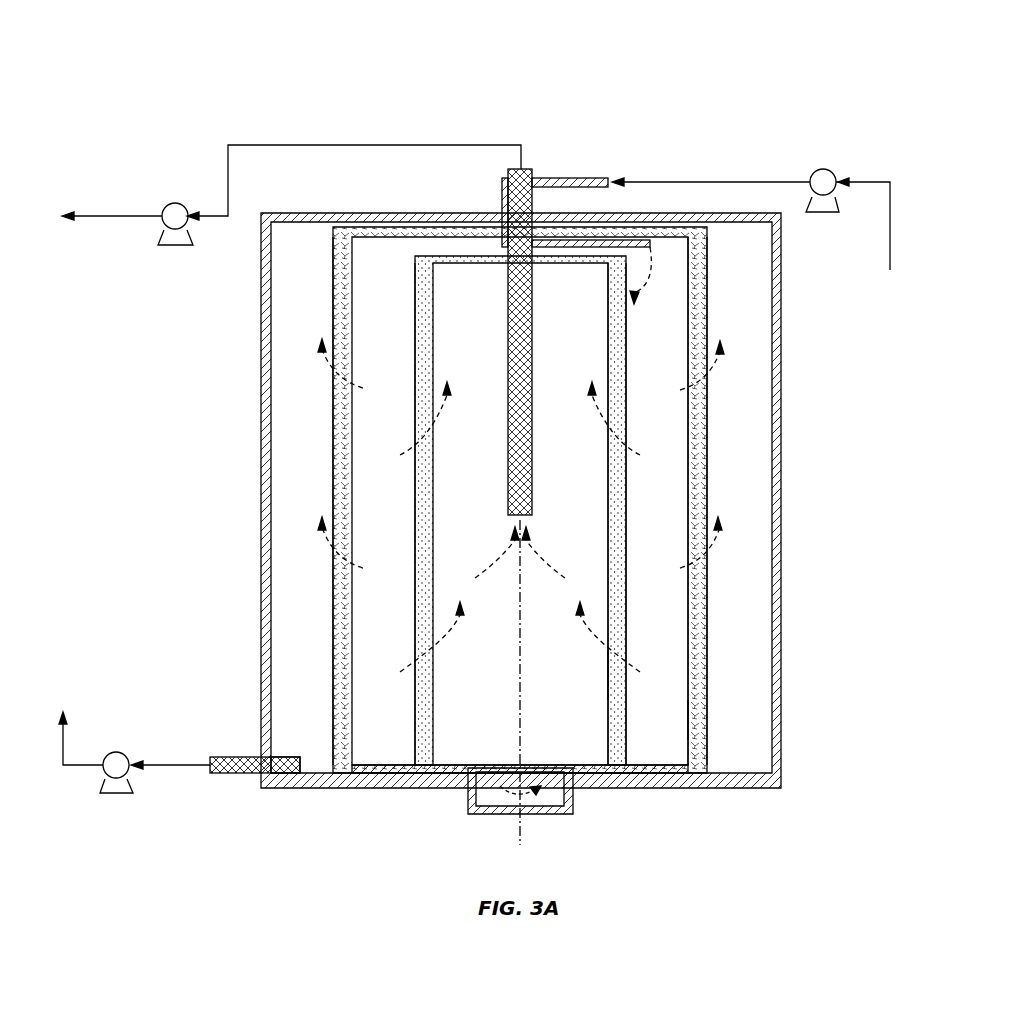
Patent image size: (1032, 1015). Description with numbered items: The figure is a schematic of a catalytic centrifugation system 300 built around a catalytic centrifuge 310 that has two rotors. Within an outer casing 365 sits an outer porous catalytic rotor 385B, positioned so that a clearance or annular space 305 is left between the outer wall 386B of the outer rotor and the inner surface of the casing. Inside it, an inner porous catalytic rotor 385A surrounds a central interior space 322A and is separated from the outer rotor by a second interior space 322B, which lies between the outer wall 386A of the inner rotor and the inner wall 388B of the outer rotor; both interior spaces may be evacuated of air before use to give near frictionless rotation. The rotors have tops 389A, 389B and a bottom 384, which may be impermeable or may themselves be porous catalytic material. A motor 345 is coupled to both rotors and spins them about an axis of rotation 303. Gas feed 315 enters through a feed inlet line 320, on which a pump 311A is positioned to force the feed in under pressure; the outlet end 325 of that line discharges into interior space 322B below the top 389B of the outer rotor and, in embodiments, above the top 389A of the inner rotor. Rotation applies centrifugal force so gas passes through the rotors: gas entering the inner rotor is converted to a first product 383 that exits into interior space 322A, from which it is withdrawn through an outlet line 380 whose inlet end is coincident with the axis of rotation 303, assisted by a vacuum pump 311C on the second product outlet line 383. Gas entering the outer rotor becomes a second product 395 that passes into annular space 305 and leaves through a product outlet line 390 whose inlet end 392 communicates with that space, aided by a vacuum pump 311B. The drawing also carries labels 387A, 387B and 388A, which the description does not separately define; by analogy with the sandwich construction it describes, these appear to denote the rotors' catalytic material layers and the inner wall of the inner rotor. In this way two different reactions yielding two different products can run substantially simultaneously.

The system 300 is at (156, 46).
The axis of rotation 303 is at (518, 838).
The annular space 305 is at (539, 413).
The catalytic centrifuge 310 is at (212, 462).
The pump 311A is at (823, 168).
The pump 311B is at (116, 752).
The pump 311C is at (175, 203).
The gas feed 315 is at (712, 182).
The feed inlet line 320 is at (521, 169).
The interior space 322A is at (520, 495).
The interior space 322B is at (657, 298).
The outlet end 325 is at (626, 240).
The motor 345 is at (573, 795).
The outer casing 365 is at (781, 370).
The outlet line 380 is at (588, 178).
The second product outlet line 383 is at (376, 145).
The bottom 384 is at (405, 773).
The inner porous catalytic rotor 385A is at (416, 303).
The outer porous catalytic rotor 385B is at (338, 328).
The outer wall 386A is at (625, 465).
The outer wall 386B is at (707, 503).
The inner wall lower portion 387A is at (625, 612).
The intermediate wall lower portion 387B is at (707, 663).
The inner wall opening 388A is at (608, 670).
The inner wall 388B is at (688, 718).
The top 389A is at (460, 256).
The top 389B is at (370, 227).
The product outlet line 390 is at (230, 757).
The inlet end 392 is at (283, 757).
The second product 395 is at (185, 773).